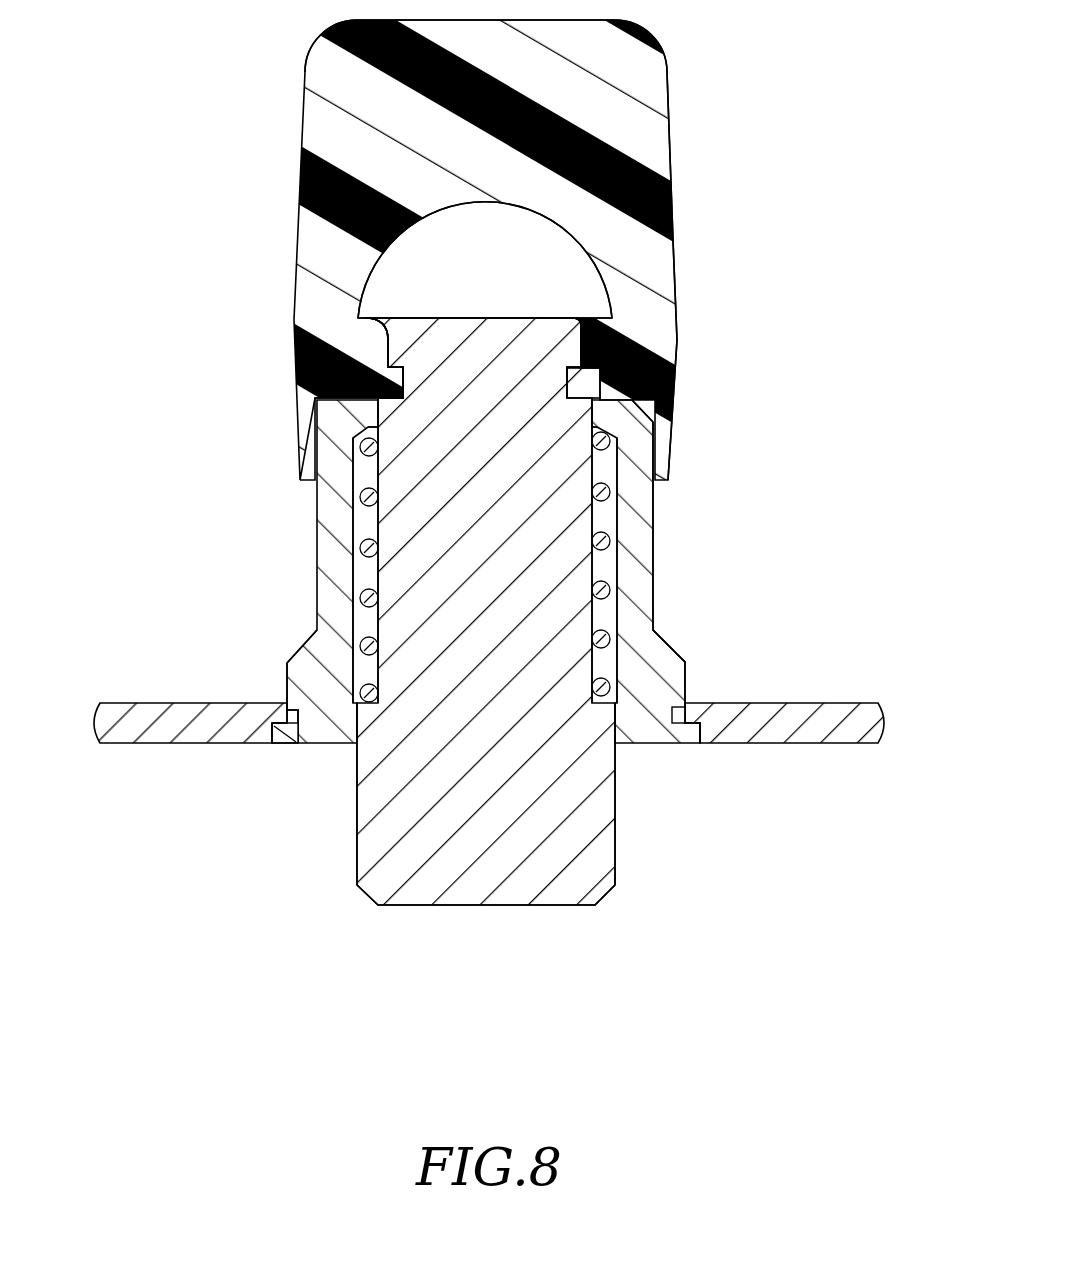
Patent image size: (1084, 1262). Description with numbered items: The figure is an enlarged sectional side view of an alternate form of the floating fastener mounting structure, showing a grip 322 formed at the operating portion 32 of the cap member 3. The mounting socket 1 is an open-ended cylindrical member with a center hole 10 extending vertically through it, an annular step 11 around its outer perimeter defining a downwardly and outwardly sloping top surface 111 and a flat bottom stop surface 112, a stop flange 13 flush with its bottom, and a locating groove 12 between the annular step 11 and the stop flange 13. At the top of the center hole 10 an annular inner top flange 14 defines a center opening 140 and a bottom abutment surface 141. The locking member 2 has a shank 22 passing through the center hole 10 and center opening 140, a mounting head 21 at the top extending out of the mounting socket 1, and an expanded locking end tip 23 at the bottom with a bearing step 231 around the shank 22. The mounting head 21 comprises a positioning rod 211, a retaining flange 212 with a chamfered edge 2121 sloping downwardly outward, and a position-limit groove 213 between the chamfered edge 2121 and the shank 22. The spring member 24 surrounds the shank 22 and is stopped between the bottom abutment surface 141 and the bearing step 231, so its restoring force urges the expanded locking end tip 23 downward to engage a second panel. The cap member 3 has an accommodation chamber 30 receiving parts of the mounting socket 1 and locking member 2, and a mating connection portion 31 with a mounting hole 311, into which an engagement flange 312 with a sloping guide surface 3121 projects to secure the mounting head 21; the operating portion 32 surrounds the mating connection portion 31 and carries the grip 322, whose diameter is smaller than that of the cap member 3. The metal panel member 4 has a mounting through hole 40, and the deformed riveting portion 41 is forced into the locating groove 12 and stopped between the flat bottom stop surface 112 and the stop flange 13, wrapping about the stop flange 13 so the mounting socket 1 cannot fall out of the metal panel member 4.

The mounting socket 1 is at (640, 533).
The center hole 10 is at (622, 570).
The annular step 11 is at (645, 677).
The top surface 111 is at (680, 653).
The flat bottom stop surface 112 is at (675, 715).
The locating groove 12 is at (302, 720).
The stop flange 13 is at (283, 733).
The annular inner top flange 14 is at (684, 390).
The center opening 140 is at (597, 421).
The bottom abutment surface 141 is at (642, 412).
The locking member 2 is at (225, 595).
The mounting head 21 is at (190, 308).
The positioning rod 211 is at (456, 330).
The retaining flange 212 is at (392, 362).
The chamfered edge 2121 is at (383, 338).
The position-limit groove 213 is at (380, 403).
The shank 22 is at (388, 597).
The expanded locking end tip 23 is at (370, 855).
The bearing step 231 is at (365, 693).
The spring member 24 is at (362, 553).
The cap member 3 is at (215, 349).
The accommodation chamber 30 is at (300, 400).
The mating connection portion 31 is at (765, 271).
The mounting hole 311 is at (585, 316).
The engagement flange 312 is at (575, 338).
The sloping guide surface 3121 is at (667, 357).
The operating portion 32 is at (293, 350).
The grip 322 is at (312, 128).
The metal panel member 4 is at (141, 713).
The mounting through hole 40 is at (273, 730).
The riveting portion 41 is at (290, 707).